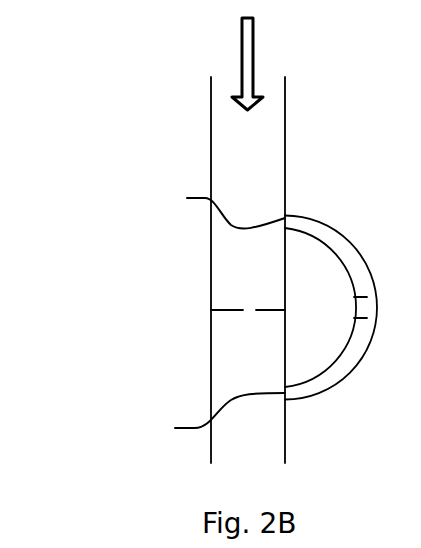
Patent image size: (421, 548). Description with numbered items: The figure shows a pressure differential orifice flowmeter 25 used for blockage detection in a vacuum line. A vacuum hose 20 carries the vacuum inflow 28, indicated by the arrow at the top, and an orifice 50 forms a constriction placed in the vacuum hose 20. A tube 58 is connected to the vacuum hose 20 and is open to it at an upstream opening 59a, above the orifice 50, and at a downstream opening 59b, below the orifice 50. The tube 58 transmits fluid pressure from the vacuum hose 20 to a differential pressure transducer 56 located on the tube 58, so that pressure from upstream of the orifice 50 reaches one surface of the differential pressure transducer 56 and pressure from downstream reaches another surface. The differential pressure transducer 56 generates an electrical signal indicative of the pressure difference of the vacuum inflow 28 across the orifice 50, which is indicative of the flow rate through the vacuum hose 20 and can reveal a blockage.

The vacuum inflow 28 is at (242, 43).
The pressure differential orifice flowmeter 25 is at (129, 223).
The vacuum hose 20 is at (210, 175).
The upstream opening 59a is at (210, 211).
The downstream opening 59b is at (203, 421).
The tube 58 is at (333, 230).
The differential pressure transducer 56 is at (355, 307).
The orifice 50 is at (252, 311).